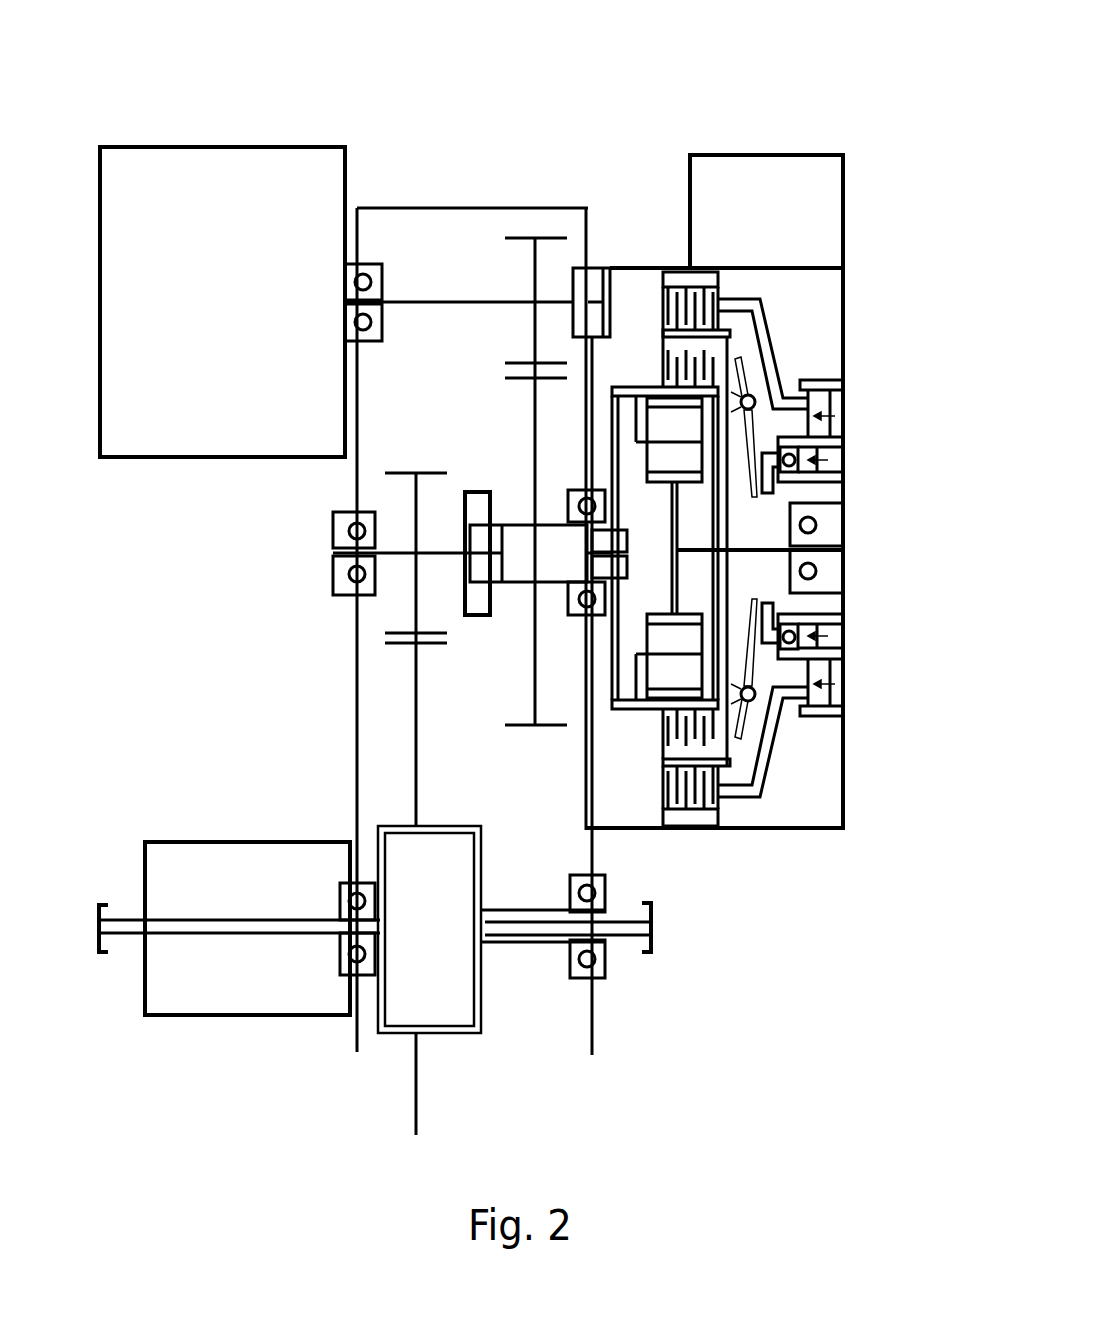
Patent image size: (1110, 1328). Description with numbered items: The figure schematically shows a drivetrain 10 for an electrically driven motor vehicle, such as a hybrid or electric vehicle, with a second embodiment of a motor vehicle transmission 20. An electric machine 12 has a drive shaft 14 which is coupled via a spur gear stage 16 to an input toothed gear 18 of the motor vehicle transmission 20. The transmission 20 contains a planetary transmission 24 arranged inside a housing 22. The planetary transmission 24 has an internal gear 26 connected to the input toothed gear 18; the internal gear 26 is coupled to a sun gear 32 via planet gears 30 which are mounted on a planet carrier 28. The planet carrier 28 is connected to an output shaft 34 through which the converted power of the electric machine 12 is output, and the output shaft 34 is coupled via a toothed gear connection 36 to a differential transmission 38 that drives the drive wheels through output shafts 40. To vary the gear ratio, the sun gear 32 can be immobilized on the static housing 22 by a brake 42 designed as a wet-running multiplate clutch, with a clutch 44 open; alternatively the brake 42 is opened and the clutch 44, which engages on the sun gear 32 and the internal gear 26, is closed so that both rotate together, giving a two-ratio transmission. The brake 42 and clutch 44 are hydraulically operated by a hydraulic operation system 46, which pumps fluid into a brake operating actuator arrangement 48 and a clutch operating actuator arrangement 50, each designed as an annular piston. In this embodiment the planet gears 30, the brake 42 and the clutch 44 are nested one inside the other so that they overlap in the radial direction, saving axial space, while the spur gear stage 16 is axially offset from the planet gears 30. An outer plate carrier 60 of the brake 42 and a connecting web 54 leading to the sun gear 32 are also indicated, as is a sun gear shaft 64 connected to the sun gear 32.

The drivetrain 10 is at (800, 82).
The electric machine 12 is at (242, 147).
The drive shaft 14 is at (392, 293).
The spur gear stage 16 is at (410, 432).
The input toothed gear 18 is at (536, 405).
The motor vehicle transmission 20 is at (742, 882).
The housing 22 is at (843, 317).
The planetary transmission 24 is at (617, 758).
The internal gear 26 is at (613, 372).
The planet carrier 28 is at (755, 398).
The planet gears 30 is at (658, 372).
The sun gear 32 is at (797, 564).
The output shaft 34 is at (440, 553).
The toothed gear connection 36 is at (384, 653).
The differential transmission 38 is at (405, 975).
The output shafts 40 is at (124, 927).
The brake 42 is at (775, 851).
The clutch 44 is at (712, 731).
The hydraulic operation system 46 is at (802, 240).
The brake operating actuator arrangement 48 is at (820, 403).
The clutch operating actuator arrangement 50 is at (815, 452).
The connecting web 54 is at (705, 515).
The outer plate carrier 60 is at (677, 817).
The sun gear shaft 64 is at (760, 550).